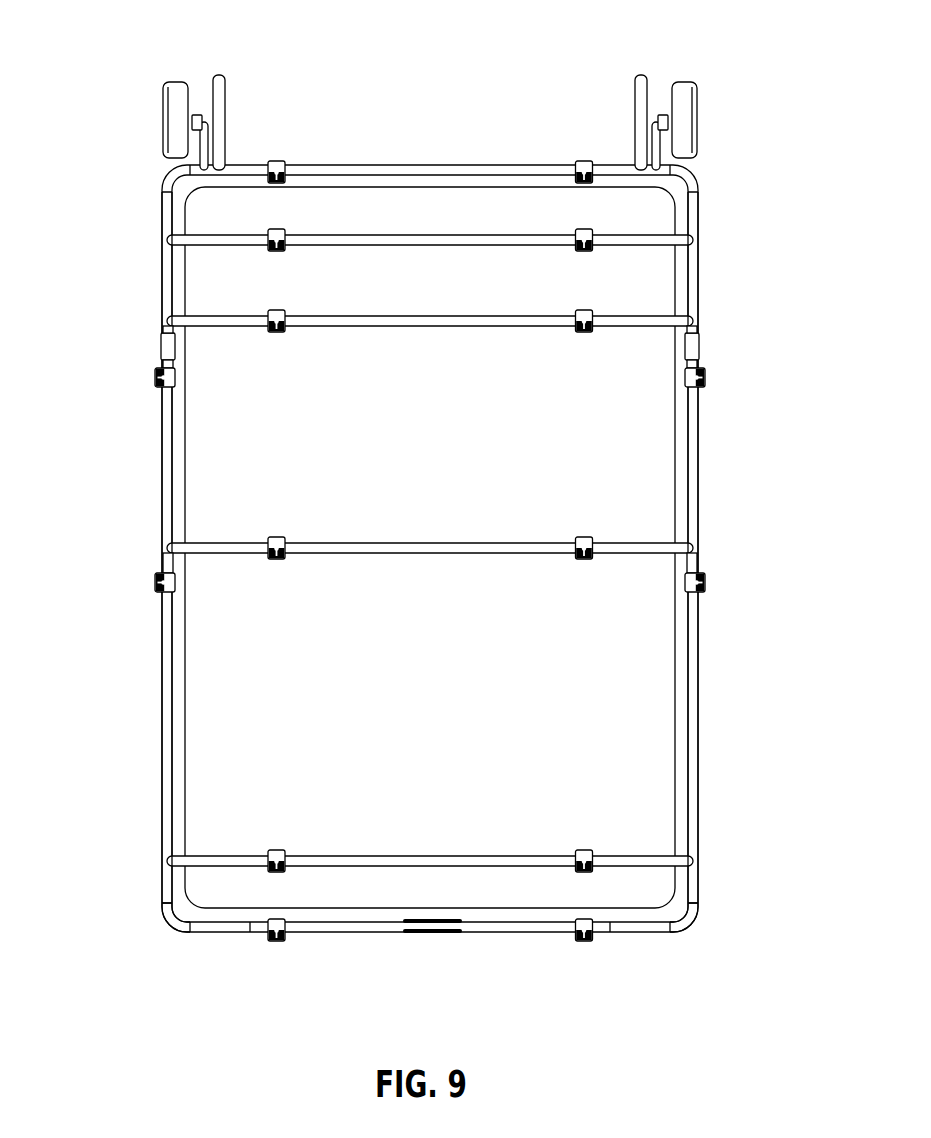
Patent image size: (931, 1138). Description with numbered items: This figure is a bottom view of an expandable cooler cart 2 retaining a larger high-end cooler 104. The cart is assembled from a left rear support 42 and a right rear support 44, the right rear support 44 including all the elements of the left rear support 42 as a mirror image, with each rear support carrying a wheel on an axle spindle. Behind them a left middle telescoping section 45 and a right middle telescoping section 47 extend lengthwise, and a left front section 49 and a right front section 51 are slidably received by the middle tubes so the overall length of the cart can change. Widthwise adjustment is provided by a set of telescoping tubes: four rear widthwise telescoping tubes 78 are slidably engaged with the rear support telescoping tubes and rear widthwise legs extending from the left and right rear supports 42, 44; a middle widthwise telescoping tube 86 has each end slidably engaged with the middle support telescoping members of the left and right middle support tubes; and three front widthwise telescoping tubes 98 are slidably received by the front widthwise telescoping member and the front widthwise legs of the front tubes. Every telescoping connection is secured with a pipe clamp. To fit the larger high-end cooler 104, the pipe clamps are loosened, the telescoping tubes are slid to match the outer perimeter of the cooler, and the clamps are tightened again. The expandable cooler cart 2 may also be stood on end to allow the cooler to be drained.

The expandable cooler cart 2 is at (117, 665).
The left rear support 42 is at (172, 67).
The right rear support 44 is at (688, 67).
The left middle telescoping section 45 is at (150, 455).
The right middle telescoping section 47 is at (715, 470).
The left front section 49 is at (137, 858).
The right front section 51 is at (715, 865).
The rear widthwise telescoping tubes 78 is at (398, 240).
The middle widthwise telescoping tube 86 is at (370, 540).
The front widthwise telescoping tubes 98 is at (477, 865).
The larger high-end cooler 104 is at (593, 680).